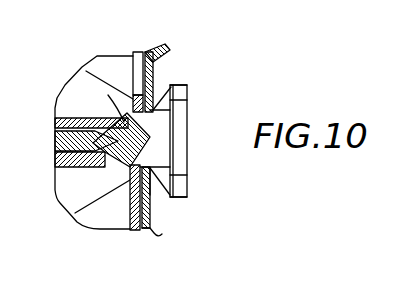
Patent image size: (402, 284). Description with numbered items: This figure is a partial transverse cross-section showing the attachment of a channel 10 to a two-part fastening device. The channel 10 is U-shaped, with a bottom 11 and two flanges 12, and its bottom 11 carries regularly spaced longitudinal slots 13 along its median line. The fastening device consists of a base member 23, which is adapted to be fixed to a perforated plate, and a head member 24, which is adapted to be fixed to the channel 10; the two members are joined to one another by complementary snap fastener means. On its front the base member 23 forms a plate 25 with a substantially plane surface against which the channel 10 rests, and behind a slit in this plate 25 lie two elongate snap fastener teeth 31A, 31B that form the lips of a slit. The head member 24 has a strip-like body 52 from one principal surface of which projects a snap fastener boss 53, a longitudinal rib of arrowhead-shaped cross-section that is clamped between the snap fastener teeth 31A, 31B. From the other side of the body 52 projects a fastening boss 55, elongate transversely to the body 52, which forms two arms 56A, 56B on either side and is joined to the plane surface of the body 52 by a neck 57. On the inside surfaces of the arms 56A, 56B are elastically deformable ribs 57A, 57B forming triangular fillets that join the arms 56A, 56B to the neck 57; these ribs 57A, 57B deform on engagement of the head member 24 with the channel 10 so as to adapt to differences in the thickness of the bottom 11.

The channel 10 is at (163, 43).
The bottom 11 is at (150, 200).
The flanges 12 is at (166, 48).
The longitudinal slots 13 is at (103, 104).
The base member 23 is at (63, 206).
The head member 24 is at (190, 80).
The plate 25 is at (130, 220).
The snap fastener tooth 31A is at (67, 116).
The snap fastener tooth 31B is at (66, 168).
The body 52 is at (128, 170).
The snap fastener boss 53 is at (84, 140).
The fastening boss 55 is at (190, 159).
The arm 56A is at (187, 89).
The arm 56B is at (178, 191).
The neck 57 is at (187, 127).
The rib 57A is at (182, 101).
The rib 57B is at (166, 175).